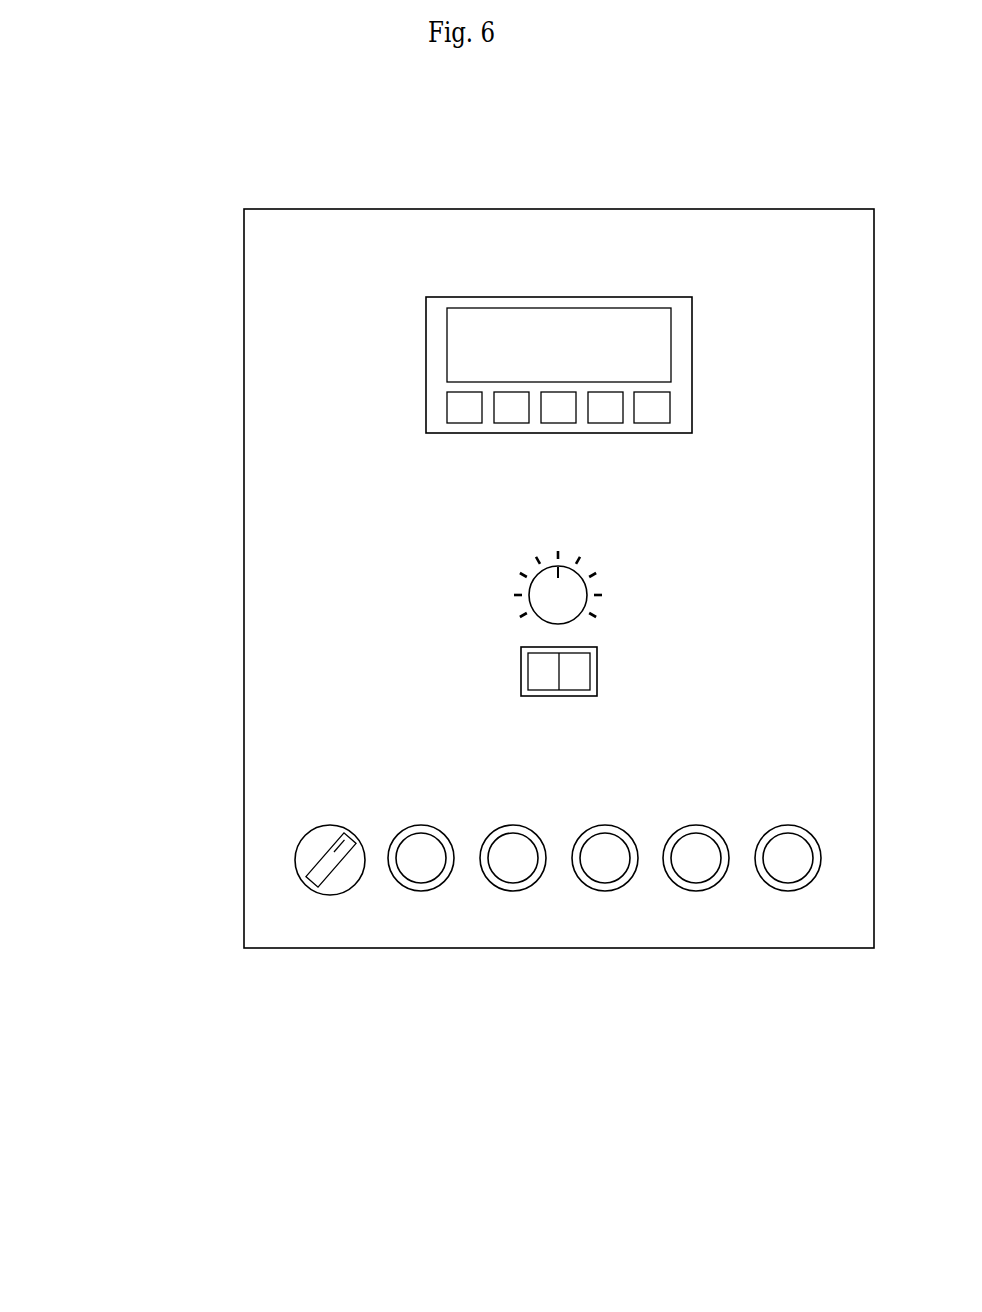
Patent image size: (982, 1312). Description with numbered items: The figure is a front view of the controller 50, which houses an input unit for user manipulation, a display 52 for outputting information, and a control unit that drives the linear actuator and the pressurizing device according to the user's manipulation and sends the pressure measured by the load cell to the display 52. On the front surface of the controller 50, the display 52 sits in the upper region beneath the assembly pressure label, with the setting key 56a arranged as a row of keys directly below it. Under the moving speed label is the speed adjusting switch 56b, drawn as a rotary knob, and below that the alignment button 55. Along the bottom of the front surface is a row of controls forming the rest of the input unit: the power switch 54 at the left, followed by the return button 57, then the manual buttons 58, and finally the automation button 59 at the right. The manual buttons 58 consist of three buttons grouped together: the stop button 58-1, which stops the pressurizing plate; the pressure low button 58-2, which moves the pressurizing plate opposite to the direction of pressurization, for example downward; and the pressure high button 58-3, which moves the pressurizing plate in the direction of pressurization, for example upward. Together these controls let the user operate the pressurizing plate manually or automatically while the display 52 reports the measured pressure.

The controller 50 is at (177, 194).
The display 52 is at (479, 344).
The setting key 56a is at (447, 408).
The speed adjusting switch 56b is at (529, 605).
The alignment button 55 is at (522, 672).
The power switch 54 is at (330, 893).
The return button 57 is at (421, 893).
The manual buttons 58 is at (688, 1112).
The stop button 58-1 is at (513, 893).
The pressure low button 58-2 is at (605, 893).
The pressure high button 58-3 is at (697, 893).
The automation button 59 is at (788, 893).